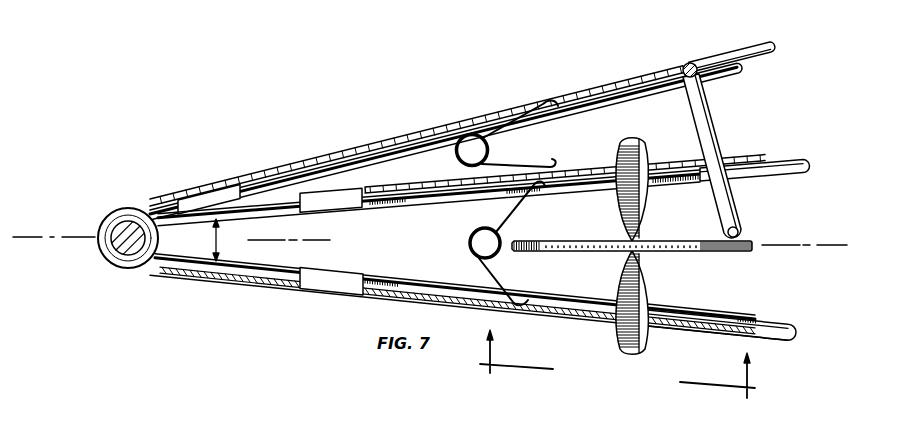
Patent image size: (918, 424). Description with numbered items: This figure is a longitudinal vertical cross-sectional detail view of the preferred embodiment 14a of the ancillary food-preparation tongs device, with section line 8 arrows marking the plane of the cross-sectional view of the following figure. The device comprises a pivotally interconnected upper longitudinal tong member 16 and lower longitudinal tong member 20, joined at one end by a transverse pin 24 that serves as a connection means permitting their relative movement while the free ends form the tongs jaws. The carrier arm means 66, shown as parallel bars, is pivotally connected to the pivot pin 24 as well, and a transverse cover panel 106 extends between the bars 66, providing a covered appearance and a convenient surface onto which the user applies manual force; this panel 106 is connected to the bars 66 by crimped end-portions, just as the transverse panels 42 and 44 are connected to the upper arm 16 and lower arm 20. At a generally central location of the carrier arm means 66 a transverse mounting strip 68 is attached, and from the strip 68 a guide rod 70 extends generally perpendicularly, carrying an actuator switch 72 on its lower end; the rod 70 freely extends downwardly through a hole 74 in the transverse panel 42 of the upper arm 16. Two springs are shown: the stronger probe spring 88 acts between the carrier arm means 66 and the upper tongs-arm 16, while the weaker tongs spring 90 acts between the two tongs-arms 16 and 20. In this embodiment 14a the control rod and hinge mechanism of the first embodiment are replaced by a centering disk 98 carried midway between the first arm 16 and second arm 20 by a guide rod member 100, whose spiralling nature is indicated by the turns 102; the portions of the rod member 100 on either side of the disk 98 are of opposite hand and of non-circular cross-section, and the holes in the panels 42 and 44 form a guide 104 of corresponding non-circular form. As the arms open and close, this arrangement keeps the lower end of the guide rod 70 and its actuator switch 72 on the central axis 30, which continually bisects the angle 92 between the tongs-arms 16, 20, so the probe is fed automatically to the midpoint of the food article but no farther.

The section line 8- 8 is at (610, 372).
The preferred embodiment 14a is at (846, 66).
The upper longitudinal tong member 16 is at (789, 162).
The lower longitudinal tong member 20 is at (769, 321).
The transverse pin 24 is at (123, 250).
The central axis 30 is at (26, 238).
The transverse panel 42 is at (590, 173).
The transverse panel 44 is at (548, 322).
The carrier arm means 66 is at (748, 46).
The transverse mounting strip 68 is at (687, 63).
The guide rod 70 is at (712, 118).
The actuator switch 72 is at (742, 231).
The hole 74 is at (727, 163).
The probe spring 88 is at (489, 153).
The tongs spring 90 is at (493, 262).
The angle 92 is at (213, 244).
The centering disk 98 is at (699, 250).
The guide rod member 100 is at (650, 206).
The turns 102 is at (621, 281).
The guide 104 is at (647, 156).
The transverse cover panel 106 is at (360, 143).